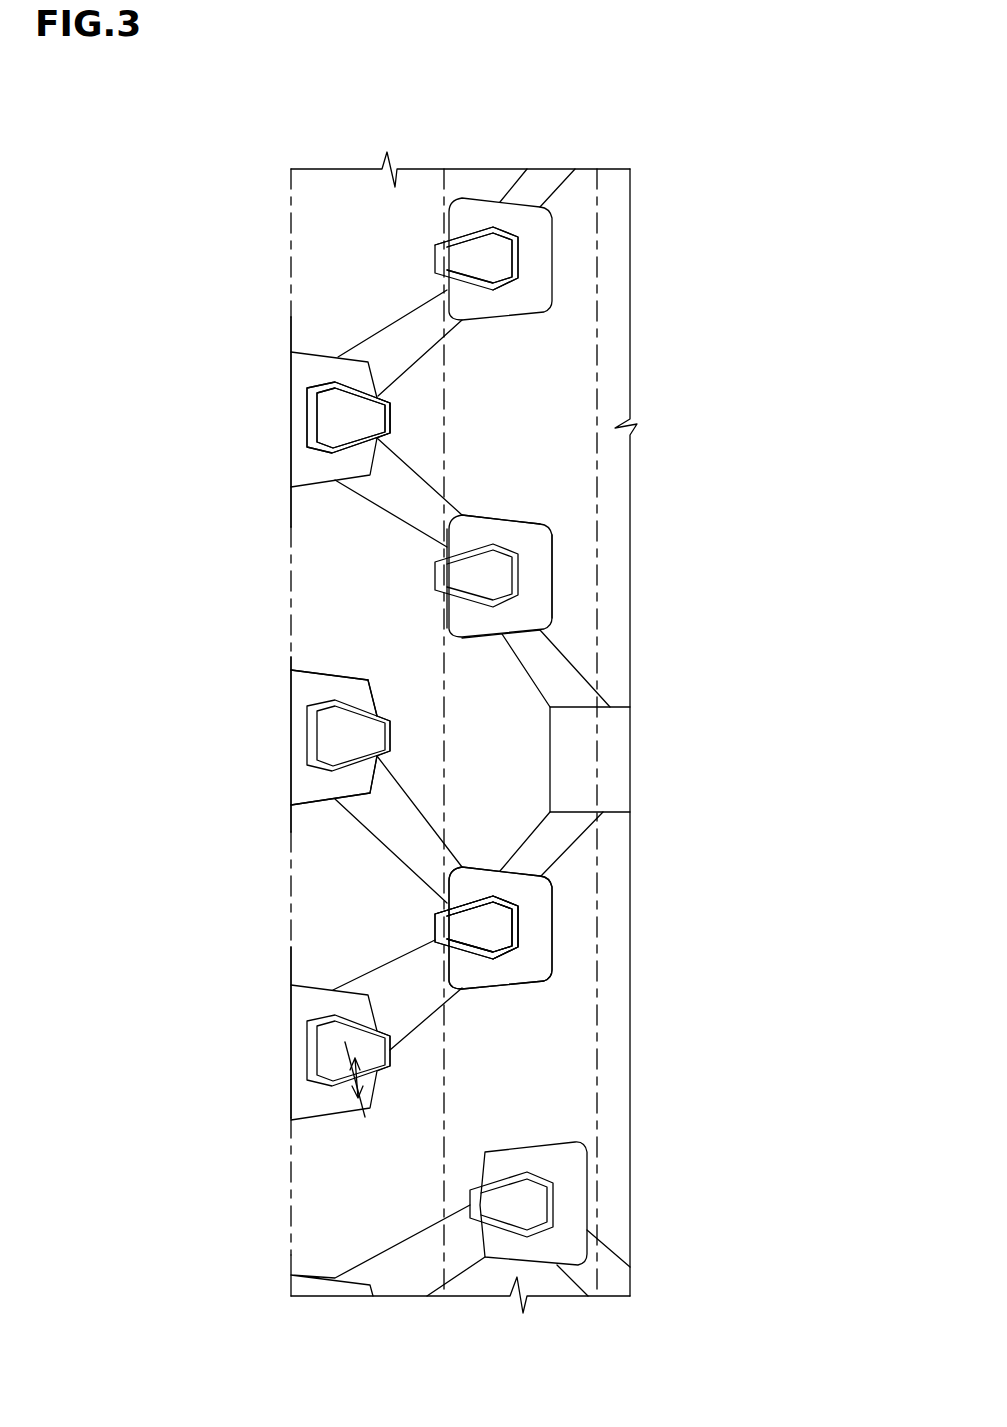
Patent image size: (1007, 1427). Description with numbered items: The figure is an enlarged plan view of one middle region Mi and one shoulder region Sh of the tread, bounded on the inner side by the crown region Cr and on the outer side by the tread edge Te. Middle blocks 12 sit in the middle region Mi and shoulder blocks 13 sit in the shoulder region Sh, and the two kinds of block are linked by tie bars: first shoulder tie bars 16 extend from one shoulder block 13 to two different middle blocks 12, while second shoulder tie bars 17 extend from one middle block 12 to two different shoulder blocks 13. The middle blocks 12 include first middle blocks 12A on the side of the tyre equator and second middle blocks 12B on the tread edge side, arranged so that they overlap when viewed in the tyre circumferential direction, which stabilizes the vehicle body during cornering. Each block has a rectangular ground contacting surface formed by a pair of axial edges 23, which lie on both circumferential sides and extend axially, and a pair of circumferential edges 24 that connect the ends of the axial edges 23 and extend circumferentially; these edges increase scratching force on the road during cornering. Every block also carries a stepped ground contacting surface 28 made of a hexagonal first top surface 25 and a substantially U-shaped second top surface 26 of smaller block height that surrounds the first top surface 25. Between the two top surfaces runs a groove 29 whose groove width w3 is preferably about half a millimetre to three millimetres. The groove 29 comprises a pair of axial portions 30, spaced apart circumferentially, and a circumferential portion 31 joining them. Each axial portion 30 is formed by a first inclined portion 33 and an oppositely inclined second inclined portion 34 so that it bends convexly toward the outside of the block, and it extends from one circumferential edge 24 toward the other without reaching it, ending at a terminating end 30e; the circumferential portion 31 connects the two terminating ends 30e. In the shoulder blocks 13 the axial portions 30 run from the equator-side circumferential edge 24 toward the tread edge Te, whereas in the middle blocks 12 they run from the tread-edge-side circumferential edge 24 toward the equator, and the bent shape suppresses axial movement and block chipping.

The middle block 12 is at (537, 253).
The first middle block 12A is at (622, 1201).
The second middle block 12B is at (577, 924).
The shoulder block 13 is at (307, 692).
The first shoulder tie bar 16 is at (413, 502).
The second shoulder tie bar 17 is at (405, 982).
The axial edge 23 is at (505, 518).
The circumferential edge 24 is at (443, 618).
The first top surface 25 is at (477, 928).
The second top surface 26 is at (513, 968).
The stepped ground contacting surface 28 is at (738, 1020).
The groove 29 is at (508, 902).
The axial portion 30 is at (357, 393).
The terminating end 30e is at (291, 352).
The circumferential portion 31 is at (313, 418).
The first inclined portion 33 is at (476, 287).
The second inclined portion 34 is at (507, 287).
The shoulder region Sh is at (344, 187).
The middle region Mi is at (489, 180).
The crown region Cr is at (622, 188).
The tread edge Te is at (291, 1066).
The groove width w3 is at (355, 1082).